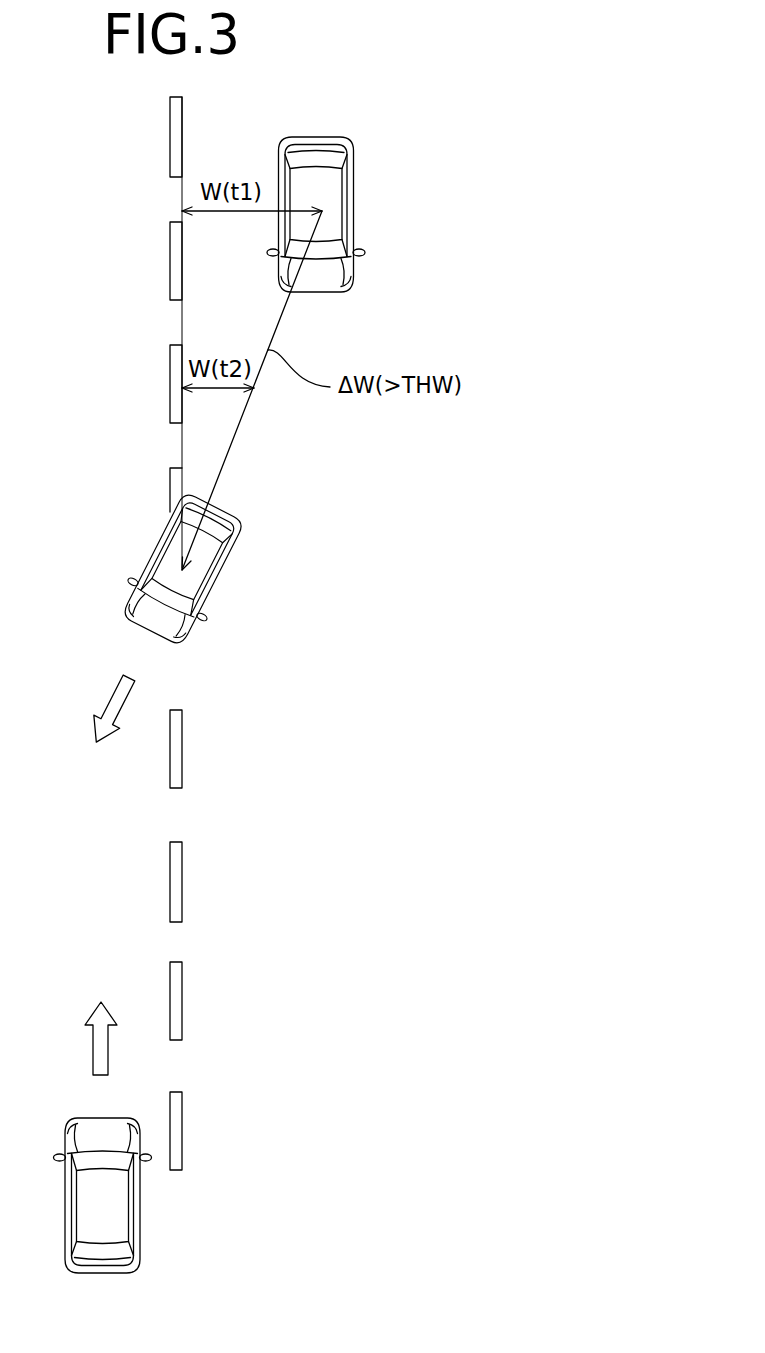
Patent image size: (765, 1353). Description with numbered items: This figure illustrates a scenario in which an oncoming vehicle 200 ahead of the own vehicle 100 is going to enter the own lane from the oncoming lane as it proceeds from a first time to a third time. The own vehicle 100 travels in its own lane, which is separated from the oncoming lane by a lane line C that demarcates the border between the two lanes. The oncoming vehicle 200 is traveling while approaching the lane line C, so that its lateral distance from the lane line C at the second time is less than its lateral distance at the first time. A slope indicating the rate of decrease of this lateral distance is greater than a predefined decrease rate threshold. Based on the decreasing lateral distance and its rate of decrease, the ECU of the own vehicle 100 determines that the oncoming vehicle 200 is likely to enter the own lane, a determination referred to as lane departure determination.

The own vehicle 100 is at (140, 1197).
The oncoming vehicle 200 is at (355, 162).
The lane line C is at (183, 762).